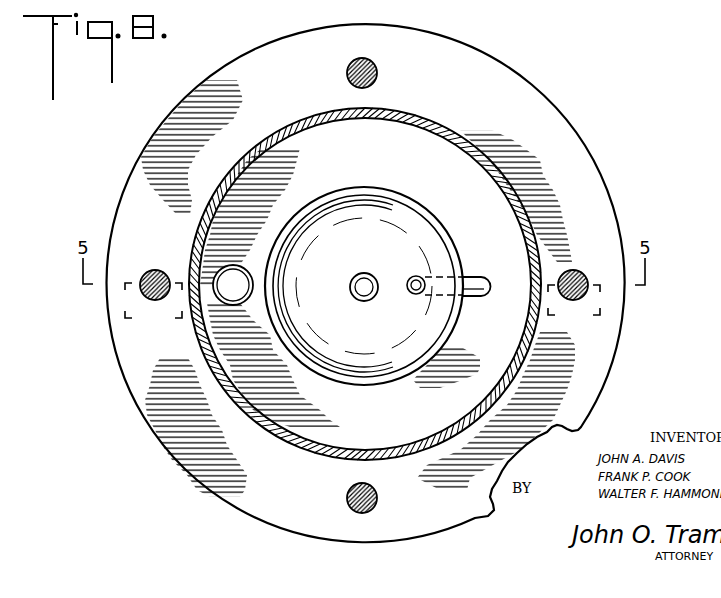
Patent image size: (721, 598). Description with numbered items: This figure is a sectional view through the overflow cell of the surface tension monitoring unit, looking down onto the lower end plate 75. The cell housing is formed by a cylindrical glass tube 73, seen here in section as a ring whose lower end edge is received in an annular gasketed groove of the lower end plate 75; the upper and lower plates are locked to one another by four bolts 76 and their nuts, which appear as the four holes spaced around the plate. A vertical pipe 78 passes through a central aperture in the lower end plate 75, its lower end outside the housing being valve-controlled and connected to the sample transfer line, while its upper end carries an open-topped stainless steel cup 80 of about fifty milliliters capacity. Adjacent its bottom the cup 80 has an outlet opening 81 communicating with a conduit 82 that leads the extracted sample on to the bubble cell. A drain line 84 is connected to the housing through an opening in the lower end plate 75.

The cylindrical glass tube 73 is at (525, 212).
The lower end plate 75 is at (126, 383).
The bolts 76 is at (347, 500).
The vertical pipe 78 is at (364, 274).
The cup 80 is at (410, 203).
The outlet opening 81 is at (416, 275).
The conduit 82 is at (483, 298).
The drain line 84 is at (247, 272).